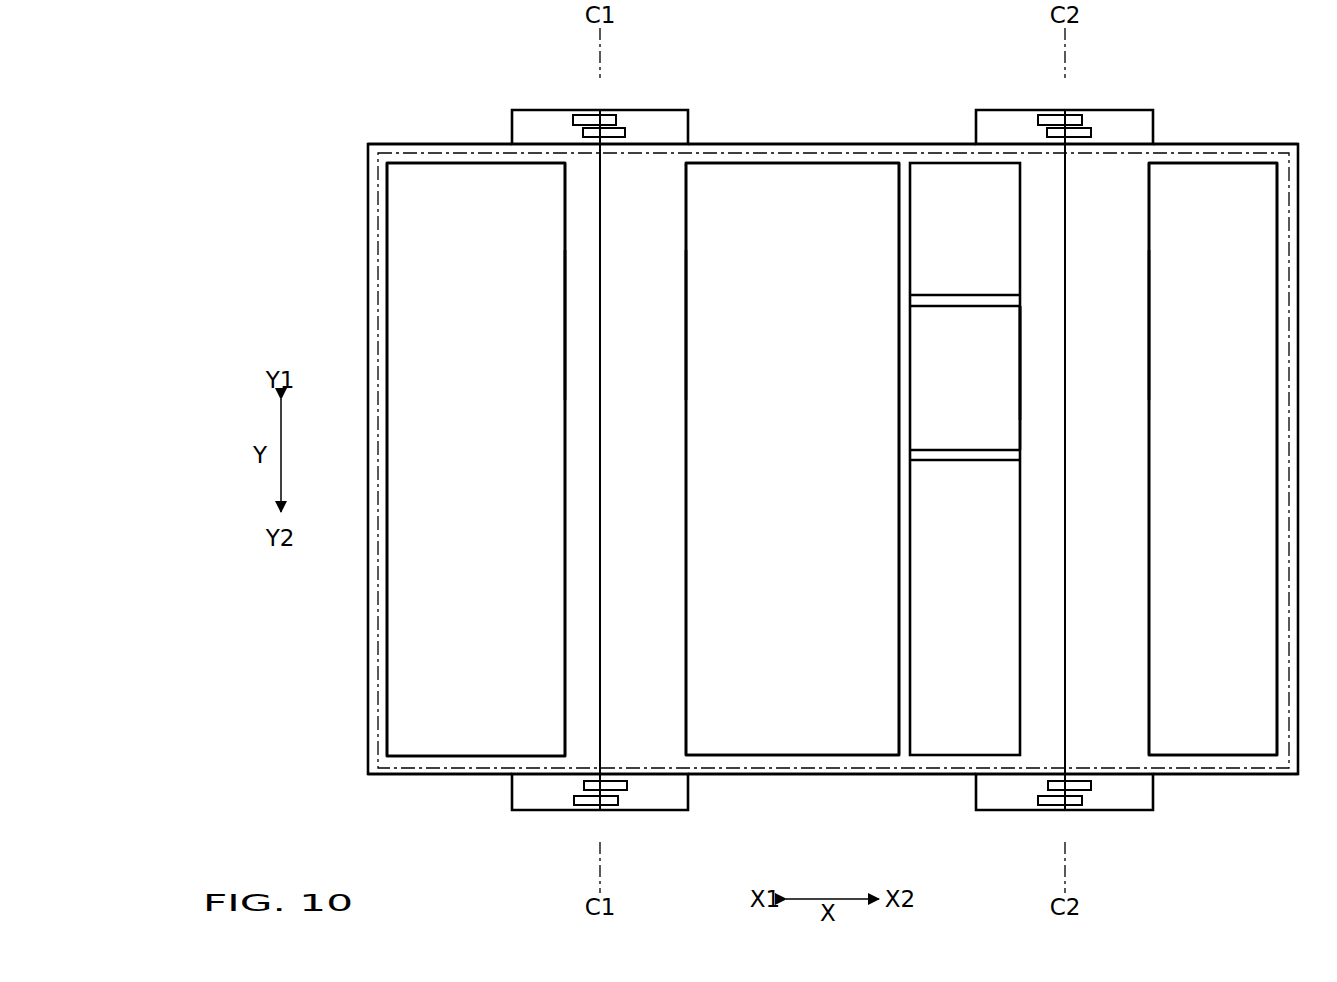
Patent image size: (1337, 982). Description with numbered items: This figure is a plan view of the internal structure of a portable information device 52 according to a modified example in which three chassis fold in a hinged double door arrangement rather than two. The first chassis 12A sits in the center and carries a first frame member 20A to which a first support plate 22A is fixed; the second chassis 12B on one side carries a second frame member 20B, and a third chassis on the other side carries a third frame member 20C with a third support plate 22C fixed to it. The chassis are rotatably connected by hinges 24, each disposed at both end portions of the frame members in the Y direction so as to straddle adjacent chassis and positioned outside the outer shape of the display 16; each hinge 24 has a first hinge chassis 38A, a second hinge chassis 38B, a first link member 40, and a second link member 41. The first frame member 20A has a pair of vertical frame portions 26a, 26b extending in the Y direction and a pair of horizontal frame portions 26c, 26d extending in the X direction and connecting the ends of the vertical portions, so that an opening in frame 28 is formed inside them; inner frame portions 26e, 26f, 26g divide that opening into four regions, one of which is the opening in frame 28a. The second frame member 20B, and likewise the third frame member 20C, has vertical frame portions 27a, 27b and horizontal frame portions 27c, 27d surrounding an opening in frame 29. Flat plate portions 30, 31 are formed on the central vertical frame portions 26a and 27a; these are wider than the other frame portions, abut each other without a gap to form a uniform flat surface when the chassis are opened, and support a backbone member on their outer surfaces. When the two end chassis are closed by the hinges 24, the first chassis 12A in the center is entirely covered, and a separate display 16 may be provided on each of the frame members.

The portable information device 52 is at (302, 61).
The first chassis 12A is at (442, 797).
The second chassis 12B is at (1225, 797).
The display 16 is at (862, 770).
The first frame member 20A is at (875, 142).
The second frame member 20B is at (1172, 142).
The third frame member 20C is at (487, 142).
The first support plate 22A is at (813, 150).
The third support plate 22C is at (443, 150).
The hinge 24 is at (556, 108).
The vertical frame portion 26a is at (1020, 407).
The vertical frame portion 26b is at (686, 432).
The horizontal frame portion 26c is at (808, 164).
The horizontal frame portion 26d is at (806, 754).
The inner frame portion 26e is at (905, 380).
The inner frame portion 26f is at (950, 296).
The inner frame portion 26g is at (950, 461).
The vertical frame portion 27a is at (569, 432).
The vertical frame portion 27b is at (388, 390).
The horizontal frame portion 27c is at (496, 164).
The horizontal frame portion 27d is at (483, 755).
The opening in frame 28 is at (759, 506).
The opening in frame 28a is at (796, 506).
The opening in frame 29 is at (461, 506).
The flat plate portion 30 is at (570, 320).
The flat plate portion 31 is at (686, 320).
The first hinge chassis 38A is at (522, 118).
The second hinge chassis 38B is at (672, 118).
The first link member 40 is at (618, 128).
The second link member 41 is at (588, 118).